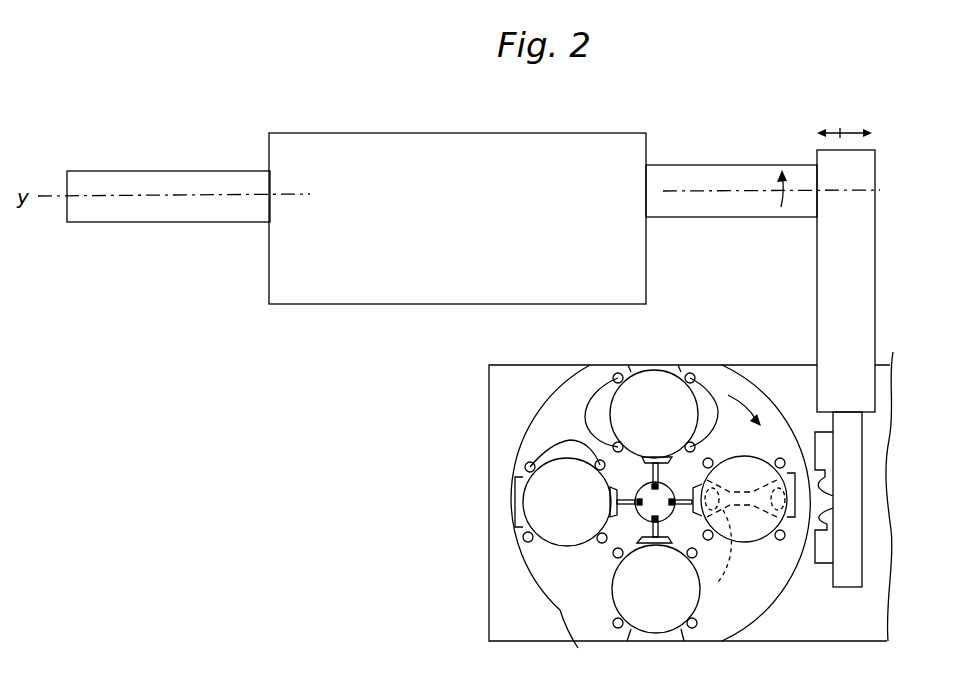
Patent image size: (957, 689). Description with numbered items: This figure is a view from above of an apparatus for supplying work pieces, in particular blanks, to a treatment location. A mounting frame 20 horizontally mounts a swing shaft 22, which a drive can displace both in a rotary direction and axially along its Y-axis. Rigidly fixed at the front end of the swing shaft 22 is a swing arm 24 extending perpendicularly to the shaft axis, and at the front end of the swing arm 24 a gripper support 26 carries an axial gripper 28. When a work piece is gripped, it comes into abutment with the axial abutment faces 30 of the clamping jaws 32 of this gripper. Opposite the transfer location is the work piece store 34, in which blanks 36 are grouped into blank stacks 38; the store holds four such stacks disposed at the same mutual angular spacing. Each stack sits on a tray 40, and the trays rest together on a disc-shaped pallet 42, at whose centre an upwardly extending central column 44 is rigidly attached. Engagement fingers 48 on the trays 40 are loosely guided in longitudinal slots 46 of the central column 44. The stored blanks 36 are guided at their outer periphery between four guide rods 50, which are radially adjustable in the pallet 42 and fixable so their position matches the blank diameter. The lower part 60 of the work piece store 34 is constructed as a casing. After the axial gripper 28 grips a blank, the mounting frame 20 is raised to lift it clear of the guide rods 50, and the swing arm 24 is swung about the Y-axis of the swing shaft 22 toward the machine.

The mounting frame 20 is at (387, 305).
The swing shaft 22 is at (727, 205).
The swing arm 24 is at (808, 349).
The gripper support 26 is at (853, 572).
The axial gripper 28 is at (836, 538).
The axial abutment faces 30 is at (833, 510).
The clamping jaws 32 is at (821, 442).
The work piece store 34 is at (505, 428).
The blanks 36 is at (643, 400).
The blank stacks 38 is at (610, 585).
The tray 40 is at (518, 525).
The disc-shaped pallet 42 is at (587, 622).
The central column 44 is at (648, 490).
The longitudinal slots 46 is at (668, 490).
The engagement fingers 48 is at (676, 508).
The guide rods 50 is at (710, 410).
The lower part 60 is at (498, 603).